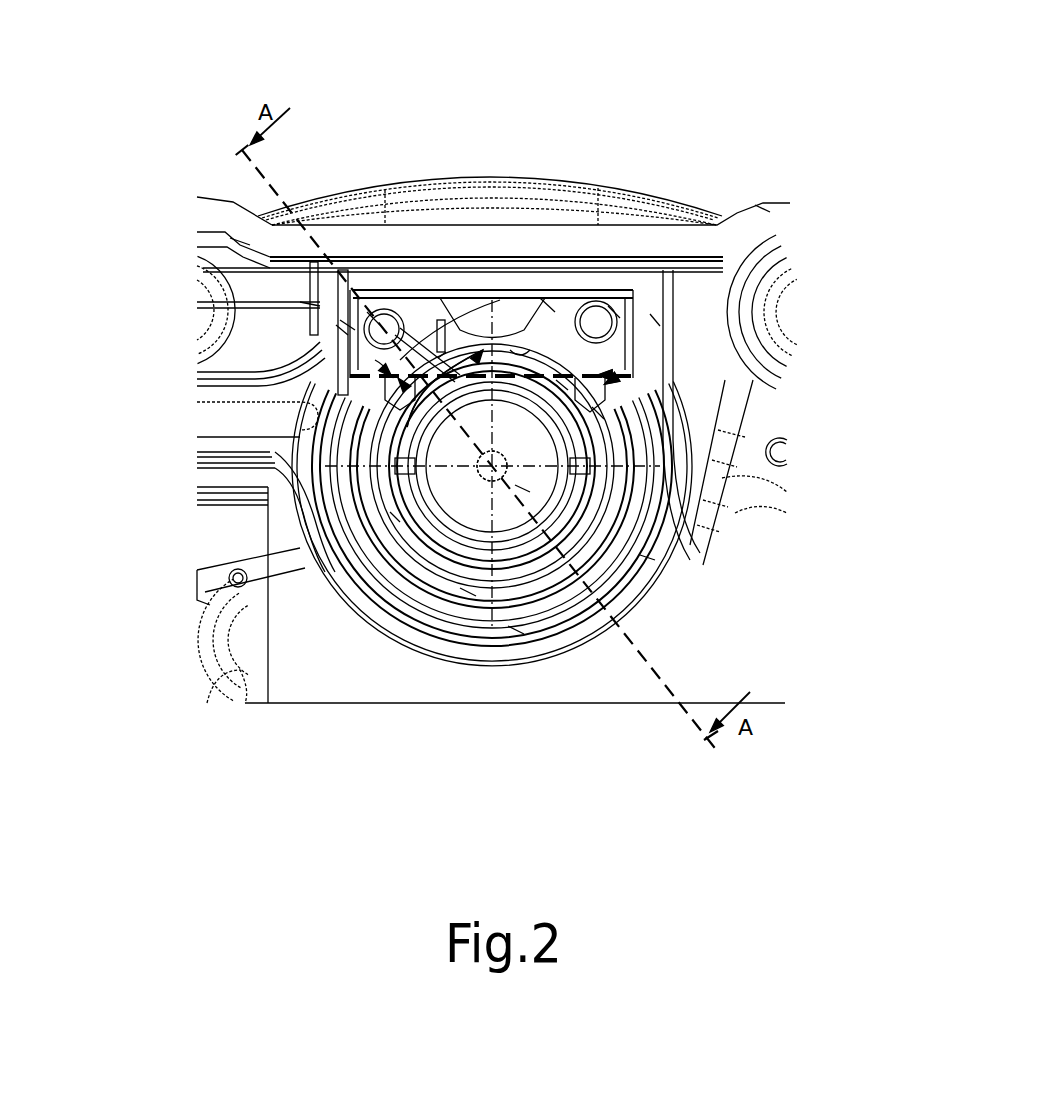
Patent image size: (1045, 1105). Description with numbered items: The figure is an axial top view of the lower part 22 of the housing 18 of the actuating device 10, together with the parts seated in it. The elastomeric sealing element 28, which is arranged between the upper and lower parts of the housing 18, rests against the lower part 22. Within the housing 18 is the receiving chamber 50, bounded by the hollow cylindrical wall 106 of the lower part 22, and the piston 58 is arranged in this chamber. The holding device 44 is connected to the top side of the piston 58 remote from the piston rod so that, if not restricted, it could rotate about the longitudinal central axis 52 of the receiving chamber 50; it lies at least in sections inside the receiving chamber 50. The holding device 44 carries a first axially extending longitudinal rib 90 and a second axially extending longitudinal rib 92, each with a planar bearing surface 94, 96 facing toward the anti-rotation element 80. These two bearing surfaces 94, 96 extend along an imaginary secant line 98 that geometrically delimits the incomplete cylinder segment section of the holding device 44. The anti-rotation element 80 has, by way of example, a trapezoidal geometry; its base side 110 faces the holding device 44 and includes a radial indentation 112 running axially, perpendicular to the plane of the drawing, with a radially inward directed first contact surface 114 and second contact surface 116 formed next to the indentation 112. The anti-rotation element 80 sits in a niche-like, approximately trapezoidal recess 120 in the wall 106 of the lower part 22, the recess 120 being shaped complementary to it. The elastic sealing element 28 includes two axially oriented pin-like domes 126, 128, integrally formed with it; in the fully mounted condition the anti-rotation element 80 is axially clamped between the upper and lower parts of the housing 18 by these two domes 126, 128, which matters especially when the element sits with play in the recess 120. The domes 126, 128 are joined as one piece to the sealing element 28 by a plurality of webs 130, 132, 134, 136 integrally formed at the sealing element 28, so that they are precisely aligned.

The actuating device 10 is at (190, 118).
The housing 18 is at (762, 210).
The lower part 22 is at (618, 578).
The sealing element 28 is at (235, 237).
The holding device 44 is at (468, 592).
The receiving chamber 50 is at (432, 590).
The longitudinal central axis 52 is at (520, 488).
The piston 58 is at (393, 517).
The anti-rotation element 80 is at (613, 312).
The first longitudinal rib 90 is at (410, 385).
The second longitudinal rib 92 is at (598, 412).
The bearing surface 94 is at (375, 360).
The bearing surface 96 is at (605, 360).
The secant line 98 is at (562, 385).
The hollow cylindrical wall 106 is at (516, 630).
The base side 110 is at (492, 466).
The radial indentation 112 is at (510, 350).
The first contact surface 114 is at (446, 352).
The second contact surface 116 is at (596, 398).
The recess 120 is at (345, 325).
The dome 126 is at (372, 318).
The dome 128 is at (592, 325).
The web 130 is at (340, 330).
The web 132 is at (384, 322).
The web 134 is at (547, 305).
The web 136 is at (655, 320).